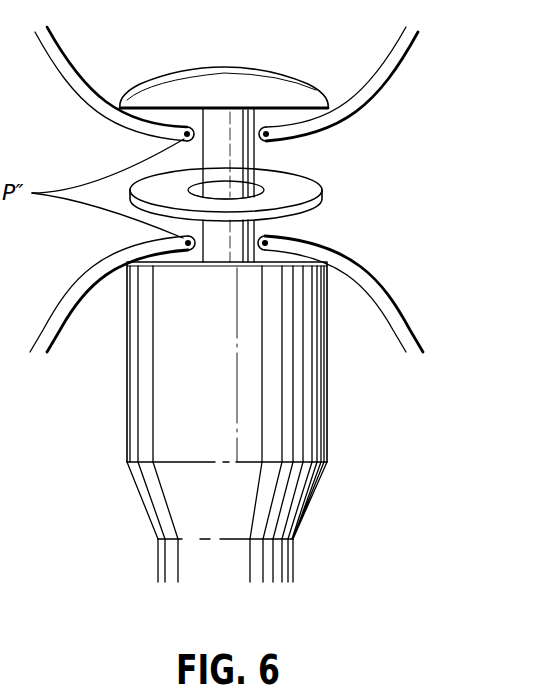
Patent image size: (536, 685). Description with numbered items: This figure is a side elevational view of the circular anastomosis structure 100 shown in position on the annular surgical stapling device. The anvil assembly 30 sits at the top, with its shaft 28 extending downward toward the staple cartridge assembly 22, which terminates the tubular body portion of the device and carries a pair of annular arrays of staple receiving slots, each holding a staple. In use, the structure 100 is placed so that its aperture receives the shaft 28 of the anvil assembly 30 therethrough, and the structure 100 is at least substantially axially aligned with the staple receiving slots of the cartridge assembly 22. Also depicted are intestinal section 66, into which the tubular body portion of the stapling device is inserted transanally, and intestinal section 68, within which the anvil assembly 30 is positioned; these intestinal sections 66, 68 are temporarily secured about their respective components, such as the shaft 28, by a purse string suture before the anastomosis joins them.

The staple cartridge assembly 22 is at (328, 432).
The shaft 28 is at (257, 154).
The anvil assembly 30 is at (296, 70).
The intestinal section 66 is at (395, 73).
The intestinal section 68 is at (363, 260).
The circular anastomosis structure 100 is at (325, 193).